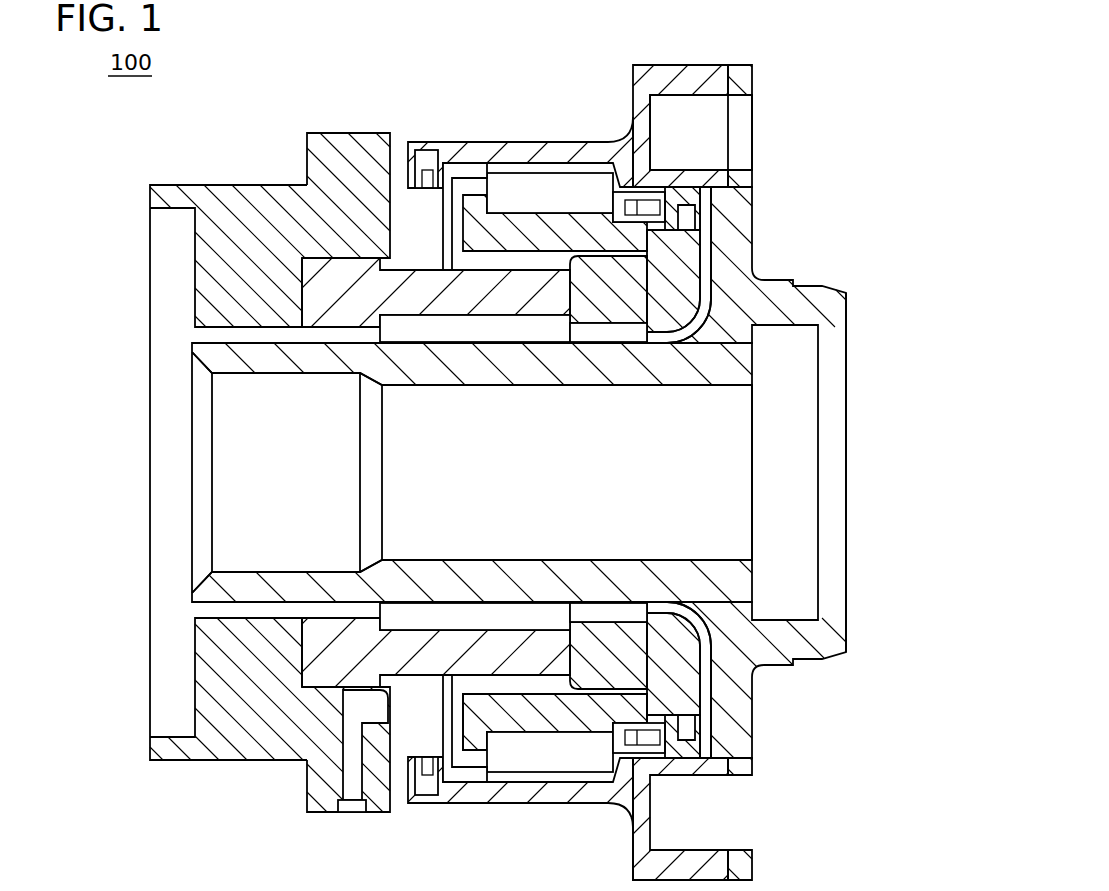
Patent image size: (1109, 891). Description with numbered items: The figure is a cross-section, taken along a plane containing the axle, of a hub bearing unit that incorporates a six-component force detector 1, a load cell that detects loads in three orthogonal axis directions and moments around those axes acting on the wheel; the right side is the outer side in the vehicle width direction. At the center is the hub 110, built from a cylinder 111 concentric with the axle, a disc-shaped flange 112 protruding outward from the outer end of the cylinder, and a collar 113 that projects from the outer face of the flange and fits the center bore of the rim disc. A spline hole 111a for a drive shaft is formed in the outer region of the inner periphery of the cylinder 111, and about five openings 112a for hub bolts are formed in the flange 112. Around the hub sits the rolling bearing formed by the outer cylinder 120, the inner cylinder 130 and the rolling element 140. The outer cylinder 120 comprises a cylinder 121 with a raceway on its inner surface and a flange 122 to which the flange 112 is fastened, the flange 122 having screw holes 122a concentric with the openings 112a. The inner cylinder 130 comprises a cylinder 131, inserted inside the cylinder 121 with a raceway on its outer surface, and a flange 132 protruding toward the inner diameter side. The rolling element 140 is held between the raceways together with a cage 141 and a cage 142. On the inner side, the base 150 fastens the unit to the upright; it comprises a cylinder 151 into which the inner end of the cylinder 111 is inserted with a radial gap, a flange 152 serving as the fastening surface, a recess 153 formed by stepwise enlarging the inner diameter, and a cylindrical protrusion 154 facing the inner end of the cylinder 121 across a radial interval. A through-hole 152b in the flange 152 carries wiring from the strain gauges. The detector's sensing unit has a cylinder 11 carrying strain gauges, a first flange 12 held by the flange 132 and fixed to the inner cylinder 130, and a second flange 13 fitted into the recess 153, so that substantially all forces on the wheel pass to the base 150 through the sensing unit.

The six-component force detector 1 is at (530, 692).
The cylinder 11 is at (500, 667).
The first flange 12 is at (672, 690).
The second flange 13 is at (326, 682).
The hub 110 is at (846, 278).
The cylinder 111 is at (727, 372).
The spline hole 111a is at (648, 398).
The flange 112 is at (754, 812).
The openings 112a is at (746, 146).
The collar 113 is at (848, 640).
The outer cylinder 120 is at (568, 442).
The cylinder 121 is at (521, 150).
The flange 122 is at (649, 90).
The screw holes 122a is at (738, 104).
The inner cylinder 130 is at (722, 238).
The cylinder 131 is at (740, 326).
The flange 132 is at (702, 266).
The rolling element 140 is at (557, 173).
The cage 141 is at (662, 190).
The cage 142 is at (444, 165).
The base 150 is at (133, 182).
The cylinder 151 is at (236, 757).
The flange 152 is at (328, 132).
The through-hole 152b is at (352, 812).
The recess 153 is at (316, 300).
The protrusion 154 is at (405, 188).